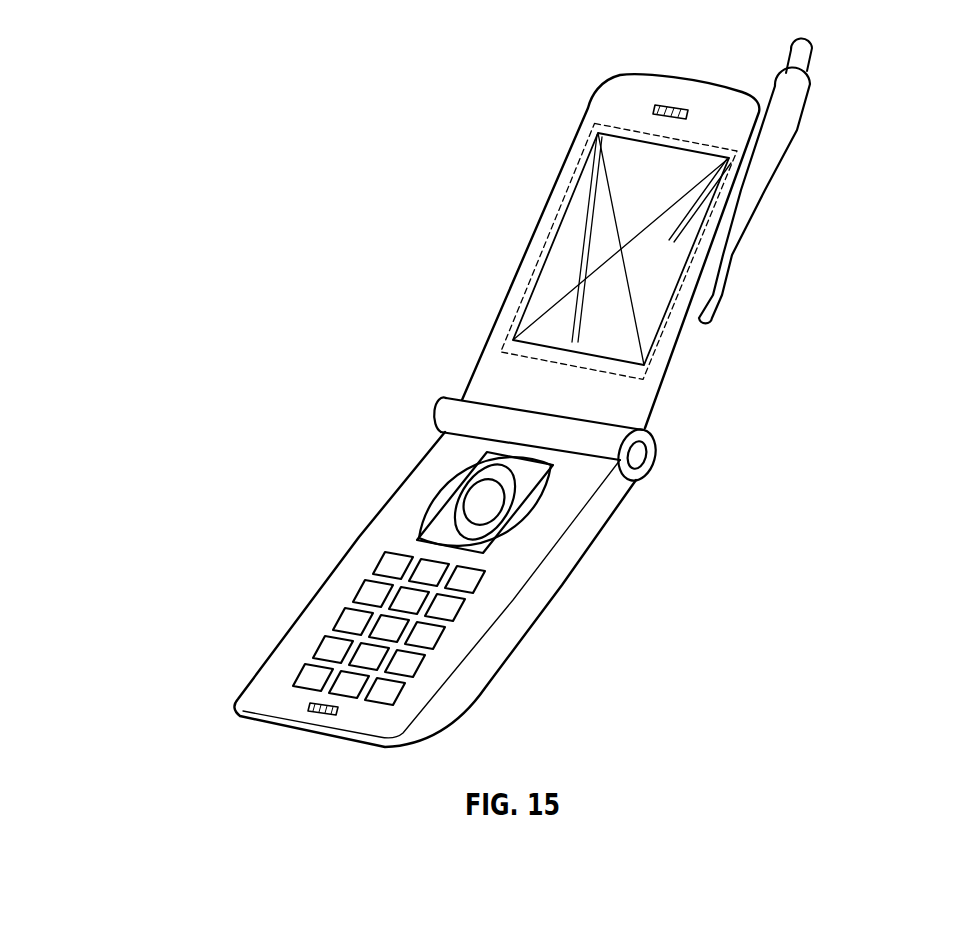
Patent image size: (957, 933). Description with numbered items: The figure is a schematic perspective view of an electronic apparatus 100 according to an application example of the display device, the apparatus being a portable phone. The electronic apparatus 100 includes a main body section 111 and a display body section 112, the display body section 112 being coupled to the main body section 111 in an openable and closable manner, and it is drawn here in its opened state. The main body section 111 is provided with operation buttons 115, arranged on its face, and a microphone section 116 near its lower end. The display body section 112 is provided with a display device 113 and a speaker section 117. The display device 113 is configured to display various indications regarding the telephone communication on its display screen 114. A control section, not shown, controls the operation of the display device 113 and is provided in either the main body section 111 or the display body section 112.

The electronic apparatus 100 is at (516, 409).
The main body section 111 is at (430, 613).
The display body section 112 is at (650, 225).
The display device 113 is at (540, 222).
The display screen 114 is at (516, 340).
The operation buttons 115 is at (378, 658).
The microphone section 116 is at (312, 722).
The speaker section 117 is at (674, 66).